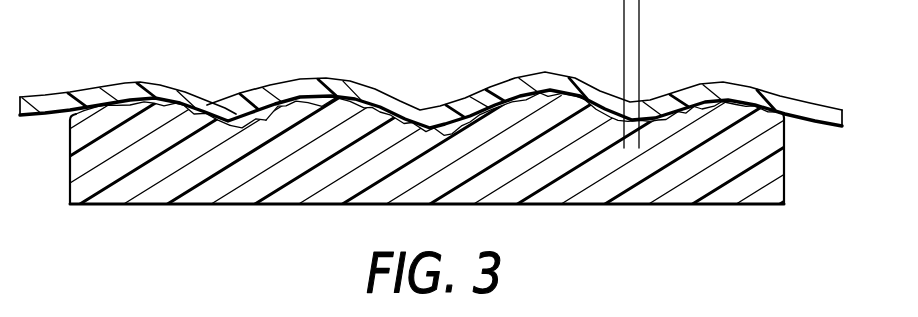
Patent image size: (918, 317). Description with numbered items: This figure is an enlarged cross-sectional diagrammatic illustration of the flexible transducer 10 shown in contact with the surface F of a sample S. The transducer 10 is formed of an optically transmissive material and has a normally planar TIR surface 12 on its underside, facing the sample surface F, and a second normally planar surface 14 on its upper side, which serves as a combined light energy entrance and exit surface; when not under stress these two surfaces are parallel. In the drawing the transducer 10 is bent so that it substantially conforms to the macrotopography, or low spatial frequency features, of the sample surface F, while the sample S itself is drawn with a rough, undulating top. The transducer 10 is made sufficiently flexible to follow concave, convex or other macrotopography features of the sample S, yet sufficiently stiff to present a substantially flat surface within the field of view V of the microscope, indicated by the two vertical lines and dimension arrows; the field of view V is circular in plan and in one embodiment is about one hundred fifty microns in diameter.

The transducer 10 is at (431, 81).
The TIR surface 12 is at (247, 110).
The second normally planar surface 14 is at (529, 72).
The sample surface F is at (253, 117).
The sample S is at (434, 163).
The field of view V is at (573, 13).